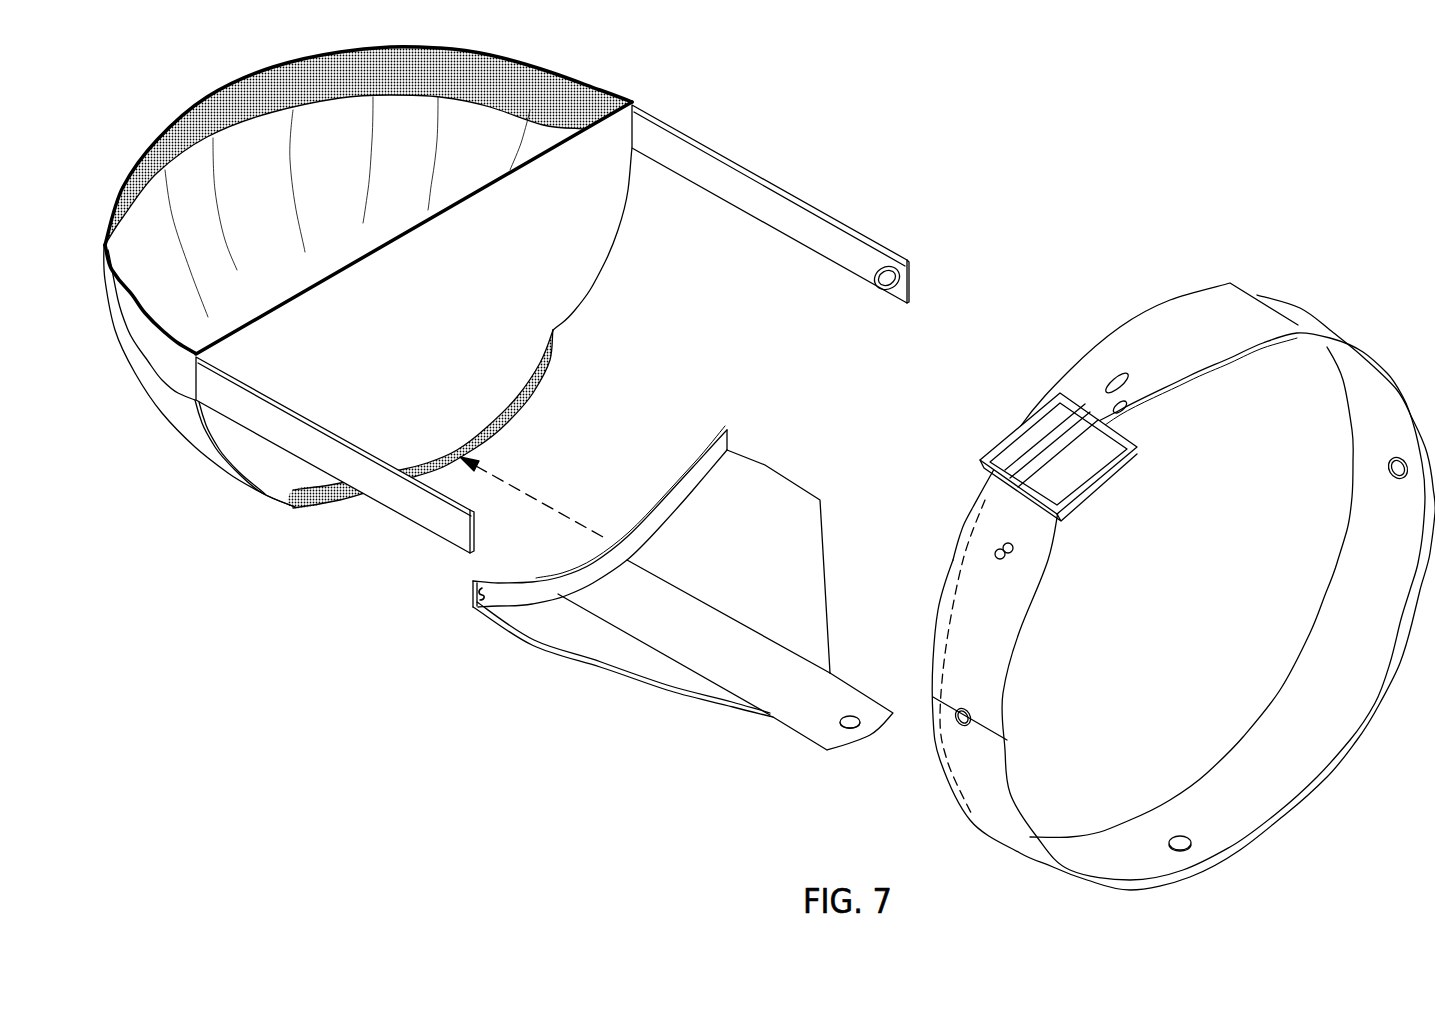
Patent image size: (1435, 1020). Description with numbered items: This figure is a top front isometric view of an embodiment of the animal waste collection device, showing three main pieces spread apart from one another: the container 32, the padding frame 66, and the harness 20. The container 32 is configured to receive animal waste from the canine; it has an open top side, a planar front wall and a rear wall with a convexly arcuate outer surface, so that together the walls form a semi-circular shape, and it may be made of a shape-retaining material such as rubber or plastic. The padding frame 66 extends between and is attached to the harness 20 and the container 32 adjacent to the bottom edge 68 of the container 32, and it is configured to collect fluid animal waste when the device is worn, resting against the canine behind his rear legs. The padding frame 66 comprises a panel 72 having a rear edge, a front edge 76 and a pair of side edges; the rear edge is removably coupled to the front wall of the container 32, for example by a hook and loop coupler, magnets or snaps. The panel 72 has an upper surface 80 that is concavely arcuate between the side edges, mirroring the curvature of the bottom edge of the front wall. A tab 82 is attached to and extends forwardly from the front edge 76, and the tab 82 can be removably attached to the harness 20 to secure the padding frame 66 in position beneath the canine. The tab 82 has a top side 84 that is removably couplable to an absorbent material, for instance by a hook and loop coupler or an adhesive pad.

The harness 20 is at (1312, 290).
The container 32 is at (590, 55).
The padding frame 66 is at (627, 627).
The bottom edge 68 is at (545, 367).
The panel 72 is at (753, 540).
The front edge 76 is at (470, 597).
The upper surface 80 is at (672, 483).
The tab 82 is at (783, 727).
The top side 84 is at (720, 651).